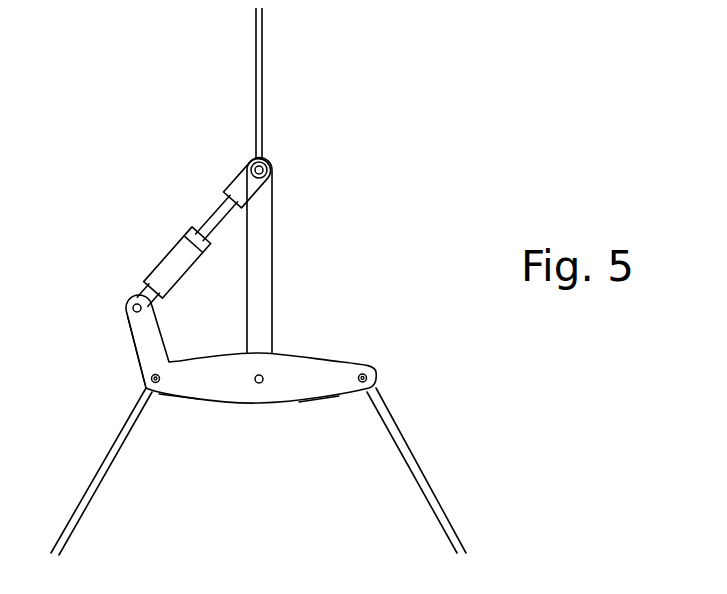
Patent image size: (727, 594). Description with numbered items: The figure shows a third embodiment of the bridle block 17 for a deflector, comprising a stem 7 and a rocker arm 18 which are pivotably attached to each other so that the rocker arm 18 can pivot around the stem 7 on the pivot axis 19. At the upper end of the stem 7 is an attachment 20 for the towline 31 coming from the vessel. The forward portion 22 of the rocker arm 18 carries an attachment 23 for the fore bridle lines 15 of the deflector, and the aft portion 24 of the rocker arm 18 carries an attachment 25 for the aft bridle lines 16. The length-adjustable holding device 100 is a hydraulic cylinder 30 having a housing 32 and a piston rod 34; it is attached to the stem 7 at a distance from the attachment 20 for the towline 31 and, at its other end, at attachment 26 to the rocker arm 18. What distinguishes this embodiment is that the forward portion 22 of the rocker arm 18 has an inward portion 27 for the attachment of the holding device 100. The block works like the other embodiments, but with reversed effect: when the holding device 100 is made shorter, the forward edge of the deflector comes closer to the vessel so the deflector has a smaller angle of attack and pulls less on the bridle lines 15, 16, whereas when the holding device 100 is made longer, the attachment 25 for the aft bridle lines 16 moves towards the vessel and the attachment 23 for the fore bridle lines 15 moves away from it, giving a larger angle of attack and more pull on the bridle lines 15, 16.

The stem 7 is at (270, 248).
The fore bridle lines 15 is at (141, 414).
The aft bridle lines 16 is at (388, 417).
The bridle block 17 is at (339, 209).
The rocker arm 18 is at (293, 373).
The pivot axis 19 is at (260, 384).
The attachment 20 is at (250, 168).
The forward portion 22 is at (190, 383).
The attachment 23 is at (153, 379).
The aft portion 24 is at (308, 381).
The attachment 25 is at (368, 377).
The attachment 26 is at (130, 302).
The inward portion 27 is at (145, 335).
The hydraulic cylinder 30 is at (163, 273).
The towline 31 is at (262, 78).
The housing 32 is at (168, 258).
The piston rod 34 is at (217, 213).
The holding device 100 is at (151, 250).